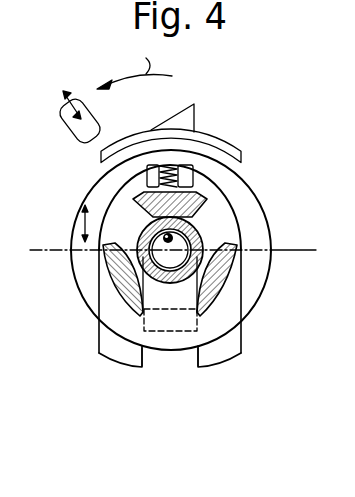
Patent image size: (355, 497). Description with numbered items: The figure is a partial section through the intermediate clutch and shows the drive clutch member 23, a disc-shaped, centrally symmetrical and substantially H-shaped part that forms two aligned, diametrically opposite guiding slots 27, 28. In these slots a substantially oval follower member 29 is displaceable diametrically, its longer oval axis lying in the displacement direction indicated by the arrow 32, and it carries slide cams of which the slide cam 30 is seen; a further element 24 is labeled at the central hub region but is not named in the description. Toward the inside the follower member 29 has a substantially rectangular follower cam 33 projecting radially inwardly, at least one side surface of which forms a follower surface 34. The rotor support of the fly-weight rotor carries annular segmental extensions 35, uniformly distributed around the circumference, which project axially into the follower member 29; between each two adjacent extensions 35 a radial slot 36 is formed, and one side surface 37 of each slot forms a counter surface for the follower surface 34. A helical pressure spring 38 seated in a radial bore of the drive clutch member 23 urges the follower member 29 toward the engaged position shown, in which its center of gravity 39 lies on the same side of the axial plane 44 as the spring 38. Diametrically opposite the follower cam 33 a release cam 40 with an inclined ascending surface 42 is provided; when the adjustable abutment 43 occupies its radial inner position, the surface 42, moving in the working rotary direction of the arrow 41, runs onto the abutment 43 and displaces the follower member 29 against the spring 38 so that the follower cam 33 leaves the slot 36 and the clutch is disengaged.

The drive clutch member 23 is at (233, 212).
The hub 24 is at (142, 237).
The guiding slot 27 is at (170, 362).
The guiding slot 28 is at (197, 176).
The follower member 29 is at (256, 278).
The slide cam 30 is at (242, 326).
The arrow 32 is at (89, 211).
The follower cam 33 is at (98, 312).
The follower surface 34 is at (222, 297).
The extension 35 is at (100, 156).
The radial slot 36 is at (205, 213).
The side surface 37 is at (197, 310).
The helical pressure spring 38 is at (153, 158).
The center of gravity 39 is at (195, 234).
The release cam 40 is at (196, 114).
The arrow 41 is at (134, 70).
The ascending surface 42 is at (148, 130).
The abutment 43 is at (64, 120).
The axial plane 44 is at (305, 250).